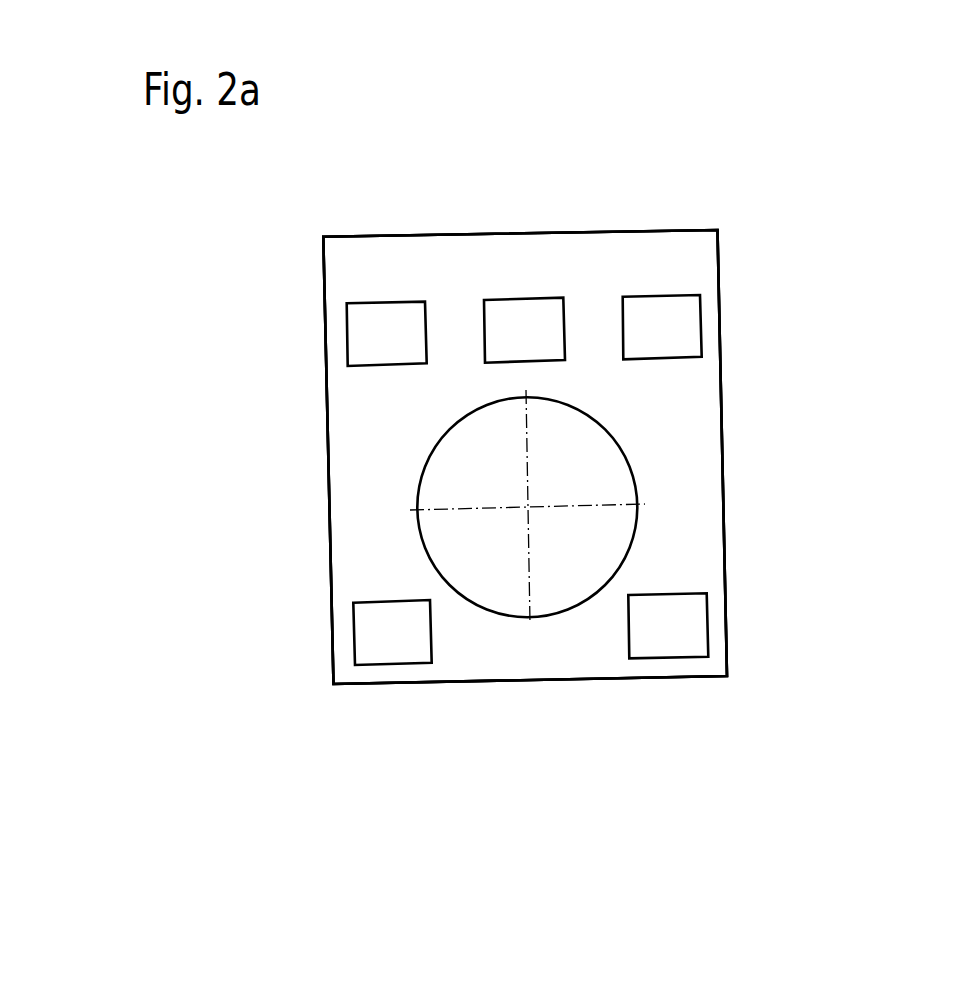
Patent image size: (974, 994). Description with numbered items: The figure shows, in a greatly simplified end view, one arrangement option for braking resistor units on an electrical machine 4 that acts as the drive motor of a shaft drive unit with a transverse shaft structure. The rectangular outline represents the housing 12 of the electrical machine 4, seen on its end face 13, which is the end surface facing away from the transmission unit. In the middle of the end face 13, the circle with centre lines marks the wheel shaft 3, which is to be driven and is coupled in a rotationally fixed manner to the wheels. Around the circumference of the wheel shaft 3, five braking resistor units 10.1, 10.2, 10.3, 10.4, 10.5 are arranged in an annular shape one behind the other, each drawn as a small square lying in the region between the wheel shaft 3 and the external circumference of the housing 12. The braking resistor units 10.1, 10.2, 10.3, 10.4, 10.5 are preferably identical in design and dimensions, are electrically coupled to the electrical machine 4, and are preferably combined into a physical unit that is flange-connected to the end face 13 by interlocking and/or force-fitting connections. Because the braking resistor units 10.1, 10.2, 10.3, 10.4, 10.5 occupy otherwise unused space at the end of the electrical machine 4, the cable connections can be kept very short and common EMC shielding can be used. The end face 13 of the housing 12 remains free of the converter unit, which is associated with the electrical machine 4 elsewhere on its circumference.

The electrical machine 4 is at (692, 217).
The housing 12 is at (692, 262).
The end face 13 is at (697, 463).
The wheel shaft 3 is at (496, 577).
The braking resistor unit 10.1 is at (389, 333).
The braking resistor unit 10.2 is at (526, 322).
The braking resistor unit 10.3 is at (679, 333).
The braking resistor unit 10.4 is at (680, 627).
The braking resistor unit 10.5 is at (387, 638).